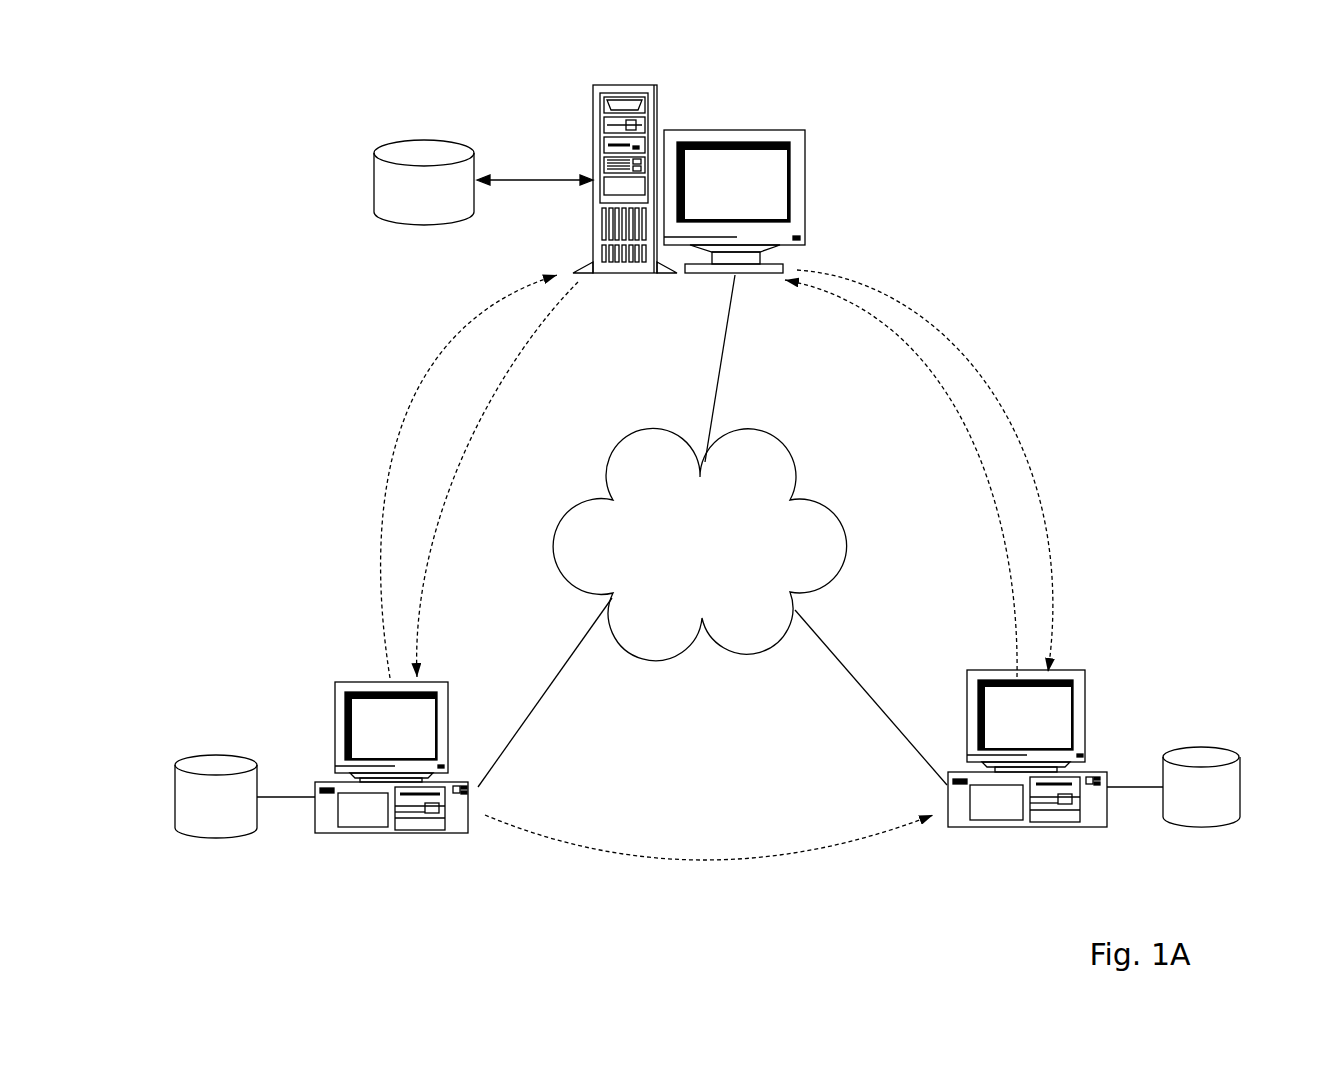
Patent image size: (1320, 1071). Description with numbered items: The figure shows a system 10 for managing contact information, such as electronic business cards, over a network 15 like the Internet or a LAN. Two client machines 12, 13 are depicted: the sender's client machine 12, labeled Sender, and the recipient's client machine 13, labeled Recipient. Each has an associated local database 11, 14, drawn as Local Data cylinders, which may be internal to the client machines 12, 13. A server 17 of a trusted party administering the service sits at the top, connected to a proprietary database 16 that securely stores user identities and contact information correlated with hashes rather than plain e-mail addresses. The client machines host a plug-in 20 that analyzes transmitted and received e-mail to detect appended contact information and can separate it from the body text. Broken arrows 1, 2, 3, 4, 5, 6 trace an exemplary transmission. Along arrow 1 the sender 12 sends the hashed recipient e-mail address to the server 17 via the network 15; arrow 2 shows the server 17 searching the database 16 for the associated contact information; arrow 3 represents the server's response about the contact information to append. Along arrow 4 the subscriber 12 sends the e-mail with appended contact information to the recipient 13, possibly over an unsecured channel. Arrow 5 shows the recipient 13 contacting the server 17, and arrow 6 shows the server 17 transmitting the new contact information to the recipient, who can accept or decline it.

The system 10 is at (272, 573).
The local database 11 is at (178, 832).
The client machine 12 is at (350, 835).
The client machine 13 is at (957, 829).
The local database 14 is at (1243, 818).
The network 15 is at (665, 455).
The proprietary database 16 is at (387, 222).
The server 17 is at (807, 185).
The plug-in 20 is at (378, 822).
The arrow 1 is at (452, 476).
The arrow 2 is at (535, 155).
The arrow 3 is at (497, 479).
The arrow 4 is at (709, 863).
The arrow 5 is at (901, 478).
The arrow 6 is at (953, 471).